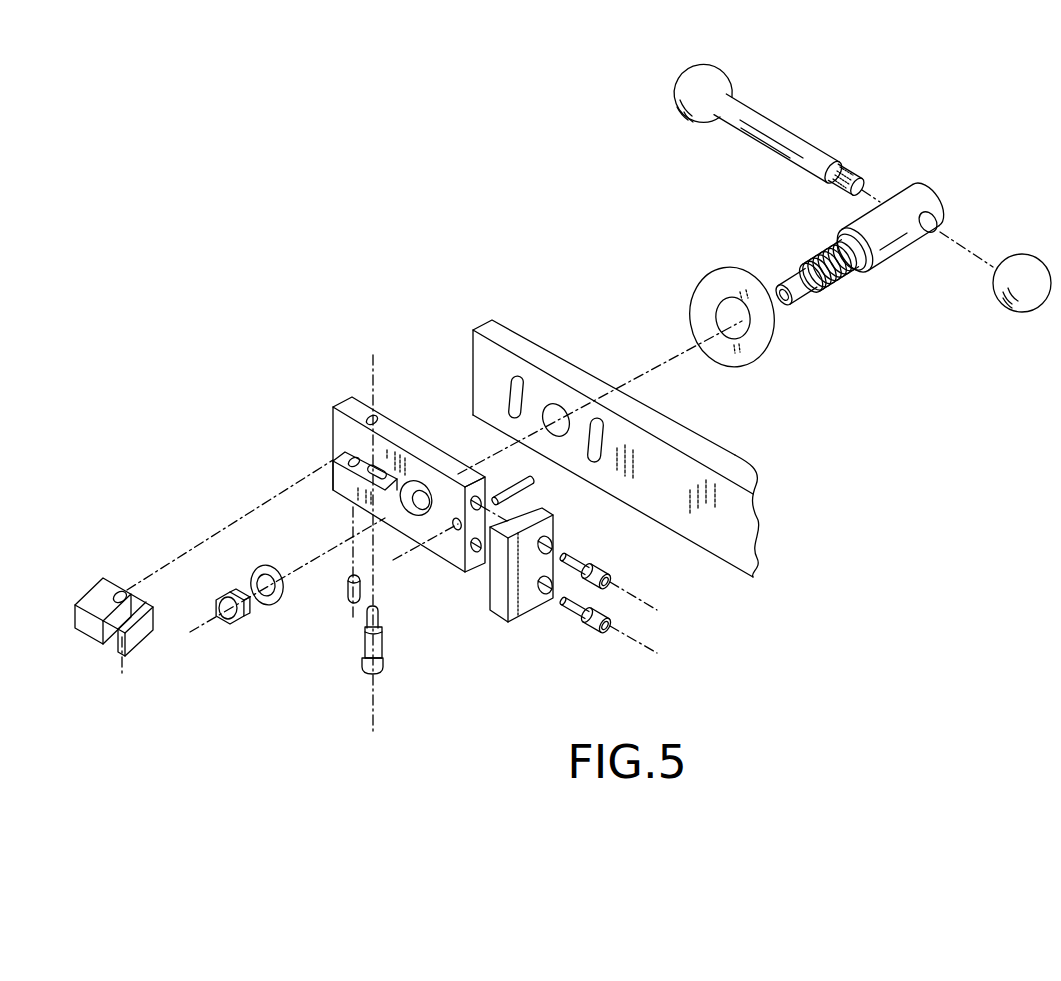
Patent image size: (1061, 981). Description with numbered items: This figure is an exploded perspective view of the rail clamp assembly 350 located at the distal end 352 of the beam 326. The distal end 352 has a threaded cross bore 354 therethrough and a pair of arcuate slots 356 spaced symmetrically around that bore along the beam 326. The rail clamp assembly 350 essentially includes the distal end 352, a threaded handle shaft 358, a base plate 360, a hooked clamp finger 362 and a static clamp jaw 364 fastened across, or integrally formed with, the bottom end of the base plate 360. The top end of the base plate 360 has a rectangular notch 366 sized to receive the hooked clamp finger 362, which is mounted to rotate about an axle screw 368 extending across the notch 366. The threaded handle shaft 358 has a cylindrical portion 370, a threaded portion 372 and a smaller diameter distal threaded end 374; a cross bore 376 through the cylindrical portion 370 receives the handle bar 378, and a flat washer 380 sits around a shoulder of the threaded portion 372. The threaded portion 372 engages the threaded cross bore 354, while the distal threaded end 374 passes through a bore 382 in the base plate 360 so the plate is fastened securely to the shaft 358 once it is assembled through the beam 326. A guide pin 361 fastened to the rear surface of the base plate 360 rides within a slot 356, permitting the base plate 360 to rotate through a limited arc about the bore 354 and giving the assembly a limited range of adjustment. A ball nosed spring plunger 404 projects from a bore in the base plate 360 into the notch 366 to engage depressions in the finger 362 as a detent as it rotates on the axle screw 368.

The rail clamp assembly 350 is at (289, 241).
The beam 326 is at (737, 455).
The distal end 352 is at (469, 346).
The threaded cross bore 354 is at (551, 404).
The arcuate slots 356 is at (512, 377).
The threaded handle shaft 358 is at (918, 194).
The base plate 360 is at (399, 423).
The guide pin 361 is at (535, 487).
The hooked clamp finger 362 is at (93, 577).
The static clamp jaw 364 is at (502, 622).
The rectangular notch 366 is at (338, 454).
The axle screw 368 is at (360, 647).
The cylindrical portion 370 is at (899, 257).
The threaded portion 372 is at (846, 280).
The distal threaded end 374 is at (801, 291).
The cross bore 376 is at (934, 223).
The handle bar 378 is at (779, 132).
The flat washer 380 is at (700, 286).
The bore 382 is at (418, 514).
The ball nosed spring plunger 404 is at (342, 593).